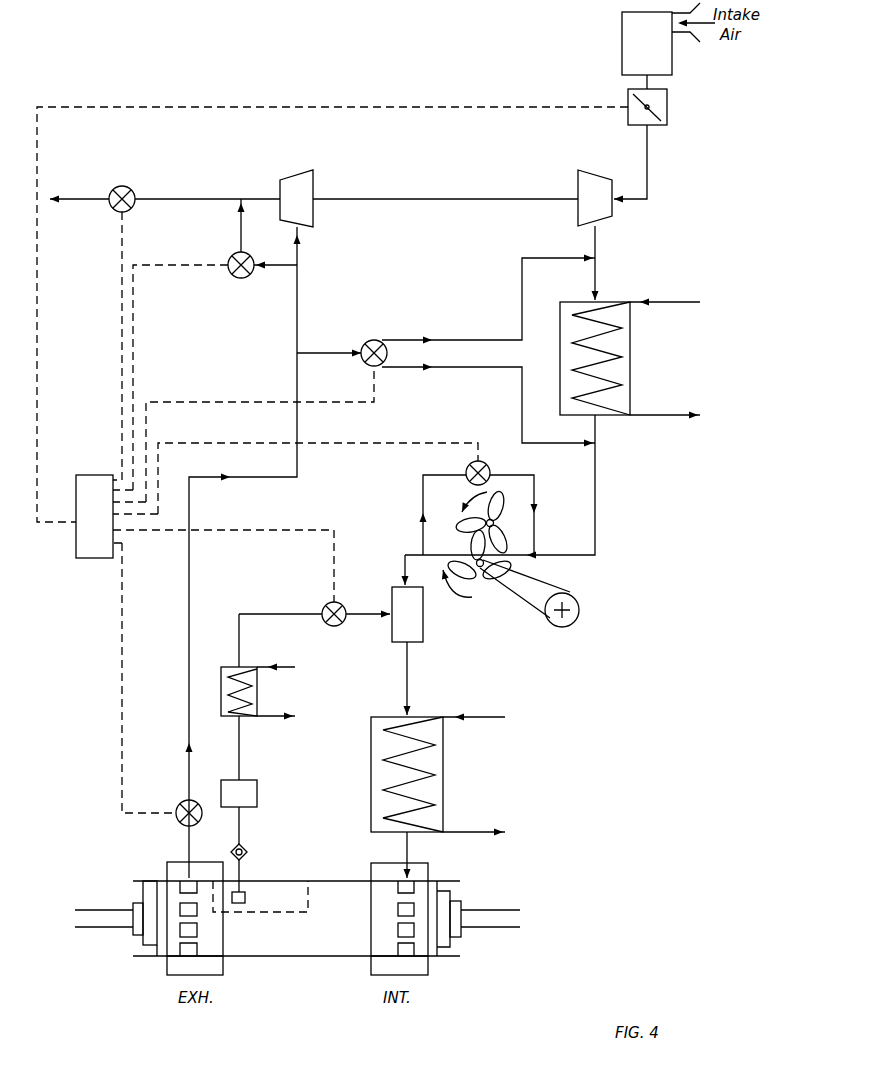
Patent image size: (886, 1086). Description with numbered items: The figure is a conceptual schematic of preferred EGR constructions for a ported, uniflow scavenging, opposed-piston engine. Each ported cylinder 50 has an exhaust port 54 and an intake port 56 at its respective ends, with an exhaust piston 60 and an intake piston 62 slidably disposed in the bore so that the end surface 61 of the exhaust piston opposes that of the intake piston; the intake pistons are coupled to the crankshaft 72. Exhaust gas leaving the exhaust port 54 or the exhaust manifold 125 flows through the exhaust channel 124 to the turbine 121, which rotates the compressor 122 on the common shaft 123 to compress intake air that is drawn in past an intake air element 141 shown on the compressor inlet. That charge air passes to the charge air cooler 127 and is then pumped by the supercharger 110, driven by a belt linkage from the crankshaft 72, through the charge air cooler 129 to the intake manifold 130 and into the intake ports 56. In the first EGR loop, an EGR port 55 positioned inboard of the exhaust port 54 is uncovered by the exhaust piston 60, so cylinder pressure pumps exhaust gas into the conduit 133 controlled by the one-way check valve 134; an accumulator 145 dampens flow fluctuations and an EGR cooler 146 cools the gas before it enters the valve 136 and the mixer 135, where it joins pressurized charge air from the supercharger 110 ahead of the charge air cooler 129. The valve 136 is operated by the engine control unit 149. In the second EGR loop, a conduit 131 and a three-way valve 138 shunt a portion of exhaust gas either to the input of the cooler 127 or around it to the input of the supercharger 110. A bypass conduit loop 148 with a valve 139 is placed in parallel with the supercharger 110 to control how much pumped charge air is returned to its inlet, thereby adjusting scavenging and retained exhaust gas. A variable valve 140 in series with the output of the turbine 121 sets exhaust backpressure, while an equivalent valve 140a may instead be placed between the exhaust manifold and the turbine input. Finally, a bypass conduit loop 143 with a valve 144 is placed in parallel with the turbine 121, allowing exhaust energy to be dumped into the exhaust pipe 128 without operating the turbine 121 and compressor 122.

The ported cylinder 50 is at (356, 881).
The exhaust port 54 is at (207, 927).
The EGR port 55 is at (245, 898).
The intake port 56 is at (388, 920).
The exhaust piston 60 is at (147, 895).
The end surface of exhaust piston 61 is at (177, 893).
The intake piston 62 is at (440, 892).
The crankshaft 72 is at (562, 627).
The supercharger 110 is at (508, 528).
The turbine 121 is at (290, 180).
The compressor 122 is at (592, 180).
The common shaft 123 is at (470, 199).
The exhaust channel 124 is at (189, 697).
The exhaust manifold 125 is at (165, 957).
The charge air cooler 127 is at (630, 360).
The exhaust pipe 128 is at (90, 201).
The charge air cooler 129 is at (443, 770).
The intake manifold 130 is at (428, 965).
The conduit 131 is at (302, 353).
The conduit 133 is at (250, 752).
The one-way check valve 134 is at (249, 852).
The mixer 135 is at (423, 630).
The valve 136 is at (338, 626).
The valve 138 is at (364, 342).
The valve 139 is at (491, 471).
The variable valve 140 is at (114, 190).
The equivalent valve 140a is at (180, 805).
The intake air sensor 141 is at (667, 107).
The bypass conduit loop 143 is at (242, 241).
The valve 144 is at (241, 278).
The accumulator 145 is at (258, 793).
The EGR cooler 146 is at (258, 685).
The bypass conduit loop 148 is at (534, 490).
The engine control unit 149 is at (93, 558).